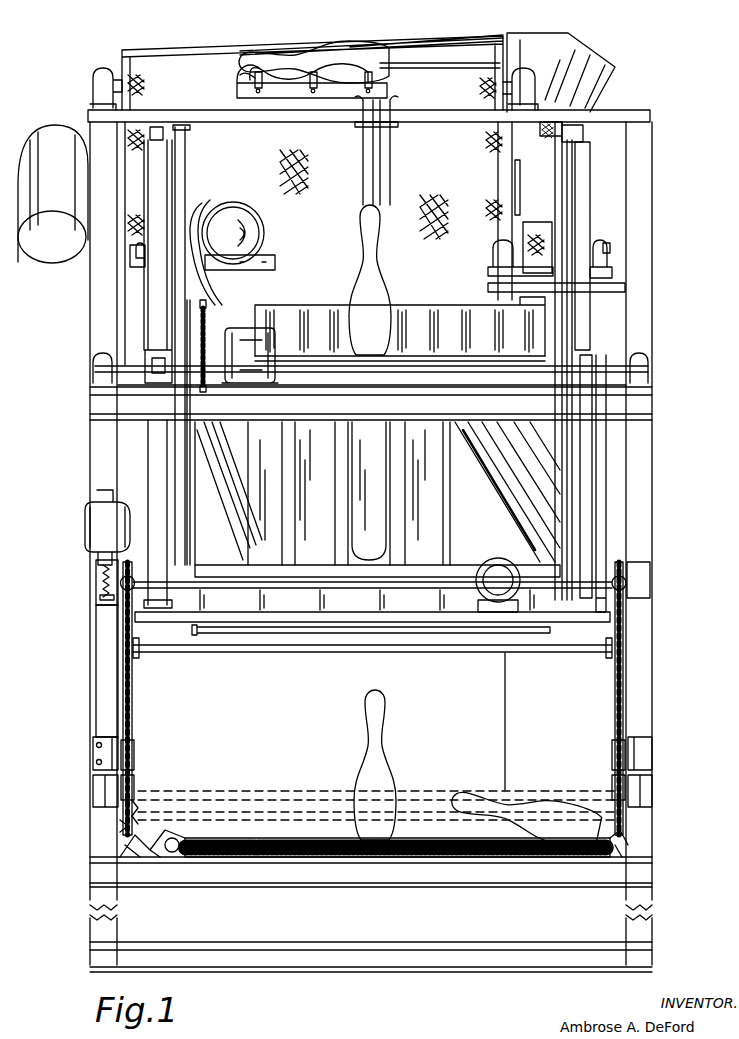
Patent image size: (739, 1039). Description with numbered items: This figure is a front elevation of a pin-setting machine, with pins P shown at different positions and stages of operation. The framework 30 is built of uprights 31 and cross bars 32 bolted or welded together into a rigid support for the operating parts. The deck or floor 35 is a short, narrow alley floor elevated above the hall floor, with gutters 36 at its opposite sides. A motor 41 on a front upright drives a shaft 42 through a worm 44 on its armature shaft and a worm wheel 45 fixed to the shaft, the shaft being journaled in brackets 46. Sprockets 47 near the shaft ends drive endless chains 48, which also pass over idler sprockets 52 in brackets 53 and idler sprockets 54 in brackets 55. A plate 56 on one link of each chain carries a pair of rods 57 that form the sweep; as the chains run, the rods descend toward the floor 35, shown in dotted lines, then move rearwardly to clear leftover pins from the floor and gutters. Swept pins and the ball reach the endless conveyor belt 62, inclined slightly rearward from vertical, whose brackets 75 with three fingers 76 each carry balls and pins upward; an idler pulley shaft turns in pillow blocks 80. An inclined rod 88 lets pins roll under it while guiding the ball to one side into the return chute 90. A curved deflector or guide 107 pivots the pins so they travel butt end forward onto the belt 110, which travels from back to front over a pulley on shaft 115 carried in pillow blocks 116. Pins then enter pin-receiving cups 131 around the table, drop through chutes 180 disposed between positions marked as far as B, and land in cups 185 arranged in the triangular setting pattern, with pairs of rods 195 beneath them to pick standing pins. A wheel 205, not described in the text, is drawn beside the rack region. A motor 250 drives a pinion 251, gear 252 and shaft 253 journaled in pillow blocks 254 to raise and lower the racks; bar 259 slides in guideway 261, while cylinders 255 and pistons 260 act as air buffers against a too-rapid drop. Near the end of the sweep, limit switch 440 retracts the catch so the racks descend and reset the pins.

The framework 30 is at (78, 672).
The uprights 31 is at (98, 444).
The cross bars 32 is at (604, 414).
The deck or floor 35 is at (413, 857).
The gutters 36 is at (178, 852).
The motor 41 is at (88, 531).
The shaft 42 is at (440, 589).
The worm 44 is at (103, 572).
The worm wheel 45 is at (104, 586).
The brackets 46 is at (98, 600).
The sprockets 47 is at (132, 590).
The endless chains 48 is at (133, 712).
The idler sprockets 52 is at (136, 782).
The brackets 53 is at (97, 797).
The idler sprockets 54 is at (136, 754).
The brackets 55 is at (93, 753).
The plate 56 is at (135, 820).
The rods 57 is at (530, 653).
The endless conveyor belt 62 is at (429, 104).
The brackets 75 is at (290, 96).
The fingers 76 is at (313, 76).
The pillow blocks 80 is at (103, 72).
The rod 88 is at (460, 45).
The return chute 90 is at (62, 263).
The curved deflector or guide 107 is at (598, 64).
The belt 110 is at (557, 236).
The shaft 115 is at (612, 246).
The pillow blocks 116 is at (492, 252).
The pin-receiving cups 131 is at (472, 310).
The chutes 180 is at (380, 432).
The cups 185 is at (318, 603).
The rods 195 is at (420, 632).
The pulley 205 is at (490, 566).
The motor 250 is at (262, 326).
The pinion 251 is at (208, 352).
The gear 252 is at (207, 318).
The shaft 253 is at (440, 374).
The pillow blocks 254 is at (93, 365).
The cylinders 255 is at (565, 529).
The bar 259 is at (585, 129).
The pistons 260 is at (560, 181).
The guideway 261 is at (587, 514).
The limit switch 440 is at (110, 738).
The position B is at (222, 212).
The pins P is at (346, 50).